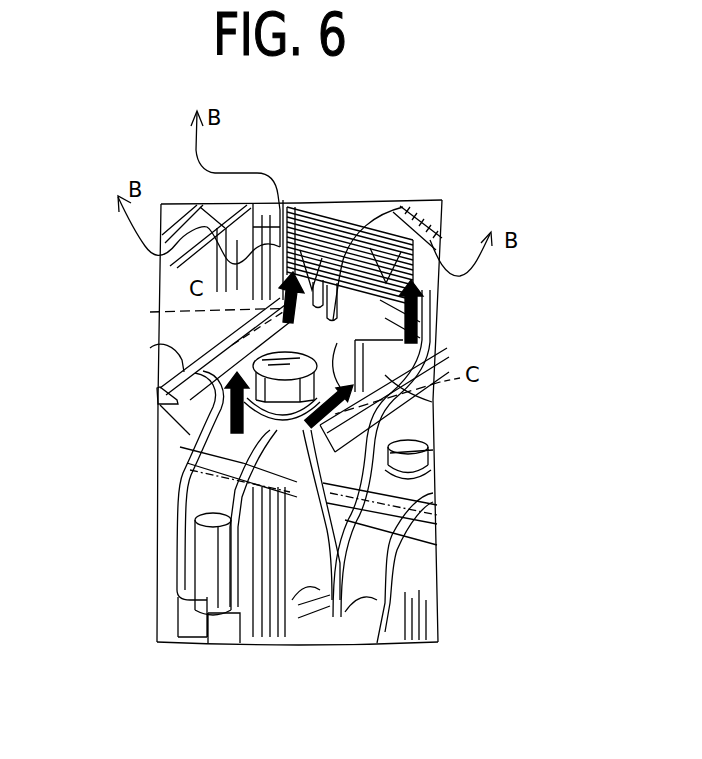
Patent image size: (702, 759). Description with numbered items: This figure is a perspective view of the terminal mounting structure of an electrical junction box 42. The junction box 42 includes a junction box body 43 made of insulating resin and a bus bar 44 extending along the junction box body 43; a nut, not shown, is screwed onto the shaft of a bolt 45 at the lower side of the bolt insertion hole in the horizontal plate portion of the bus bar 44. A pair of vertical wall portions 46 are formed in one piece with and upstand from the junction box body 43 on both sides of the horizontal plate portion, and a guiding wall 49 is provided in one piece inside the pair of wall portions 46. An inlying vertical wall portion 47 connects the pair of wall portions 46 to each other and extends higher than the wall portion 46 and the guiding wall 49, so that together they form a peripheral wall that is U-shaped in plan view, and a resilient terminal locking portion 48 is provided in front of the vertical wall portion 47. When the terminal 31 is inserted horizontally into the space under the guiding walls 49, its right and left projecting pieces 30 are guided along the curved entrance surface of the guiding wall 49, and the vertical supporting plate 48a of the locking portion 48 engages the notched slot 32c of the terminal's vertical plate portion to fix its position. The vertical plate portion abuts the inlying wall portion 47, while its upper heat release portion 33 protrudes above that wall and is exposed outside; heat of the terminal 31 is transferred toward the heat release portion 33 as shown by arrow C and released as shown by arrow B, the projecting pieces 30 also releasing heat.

The projecting pieces 30 is at (153, 310).
The terminal 31 is at (171, 474).
The notched slot 32c is at (403, 207).
The heat release portion 33 is at (340, 287).
The electrical junction box 42 is at (419, 170).
The junction box body 43 is at (163, 510).
The bus bar 44 is at (278, 642).
The bolt 45 is at (155, 393).
The vertical wall portions 46 is at (150, 348).
The inlying vertical wall portion 47 is at (438, 338).
The resilient terminal locking portion 48 is at (438, 360).
The vertical supporting plate 48a is at (336, 290).
The guiding wall 49 is at (155, 420).